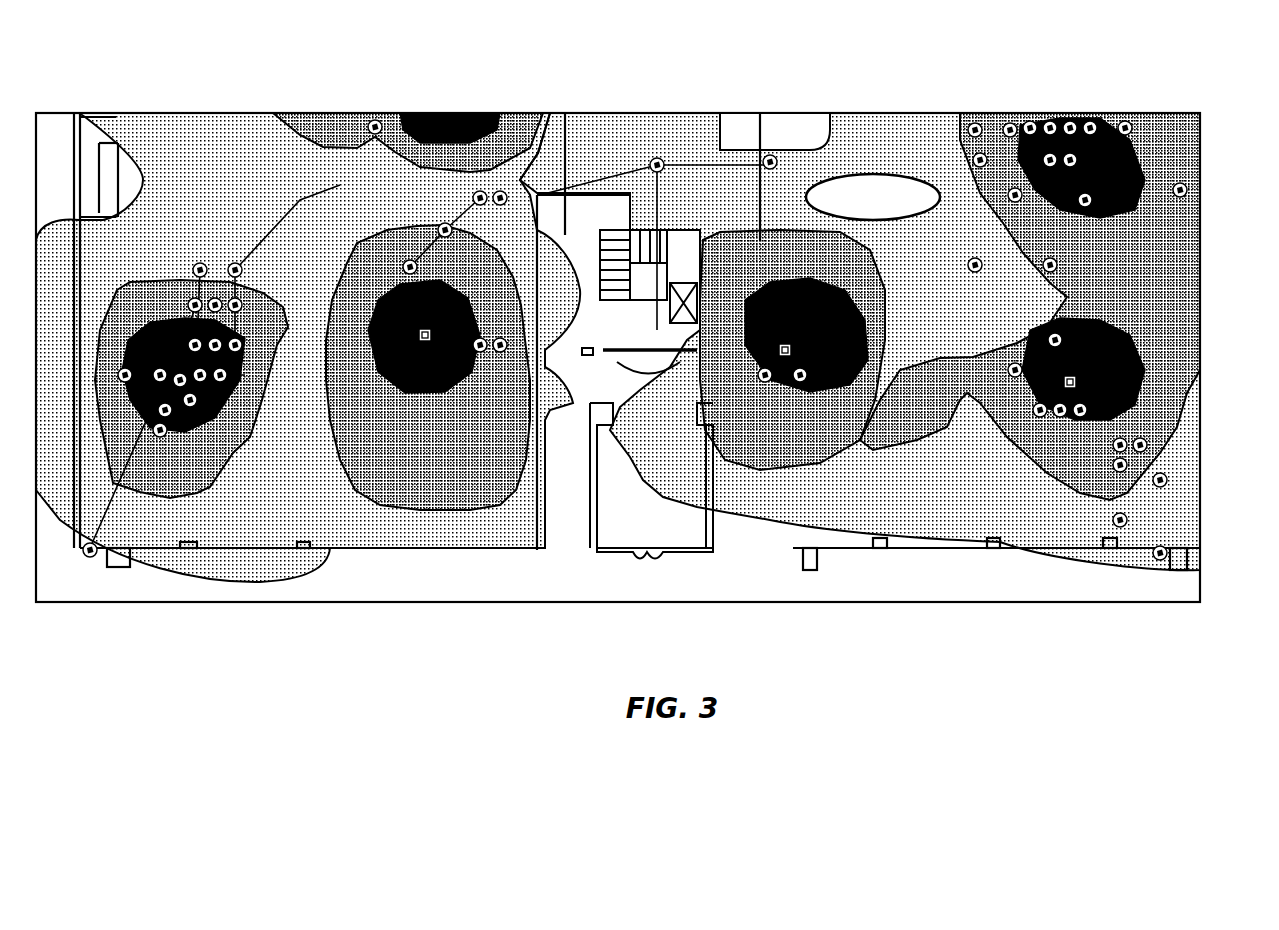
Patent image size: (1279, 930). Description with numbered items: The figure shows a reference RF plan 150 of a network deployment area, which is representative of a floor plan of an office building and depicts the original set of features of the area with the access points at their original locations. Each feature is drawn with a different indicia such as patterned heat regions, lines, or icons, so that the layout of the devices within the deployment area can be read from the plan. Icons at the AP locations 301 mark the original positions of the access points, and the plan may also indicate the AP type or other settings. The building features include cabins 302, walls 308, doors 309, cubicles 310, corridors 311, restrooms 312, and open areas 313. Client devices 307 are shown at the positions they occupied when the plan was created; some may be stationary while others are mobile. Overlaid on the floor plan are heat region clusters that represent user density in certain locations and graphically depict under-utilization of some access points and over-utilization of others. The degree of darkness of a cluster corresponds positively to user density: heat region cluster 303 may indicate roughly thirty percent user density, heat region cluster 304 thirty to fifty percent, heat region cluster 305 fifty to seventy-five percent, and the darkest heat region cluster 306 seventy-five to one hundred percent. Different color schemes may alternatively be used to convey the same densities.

The reference RF plan 150 is at (286, 42).
The AP locations 301 is at (428, 345).
The cabins 302 is at (808, 537).
The heat region cluster 303 is at (857, 190).
The heat region cluster 304 is at (456, 433).
The heat region cluster 305 is at (424, 336).
The heat region cluster 306 is at (835, 360).
The client devices 307 is at (410, 267).
The walls 308 is at (800, 440).
The doors 309 is at (1150, 292).
The cubicles 310 is at (993, 222).
The corridors 311 is at (203, 583).
The restrooms 312 is at (610, 150).
The open areas 313 is at (565, 458).